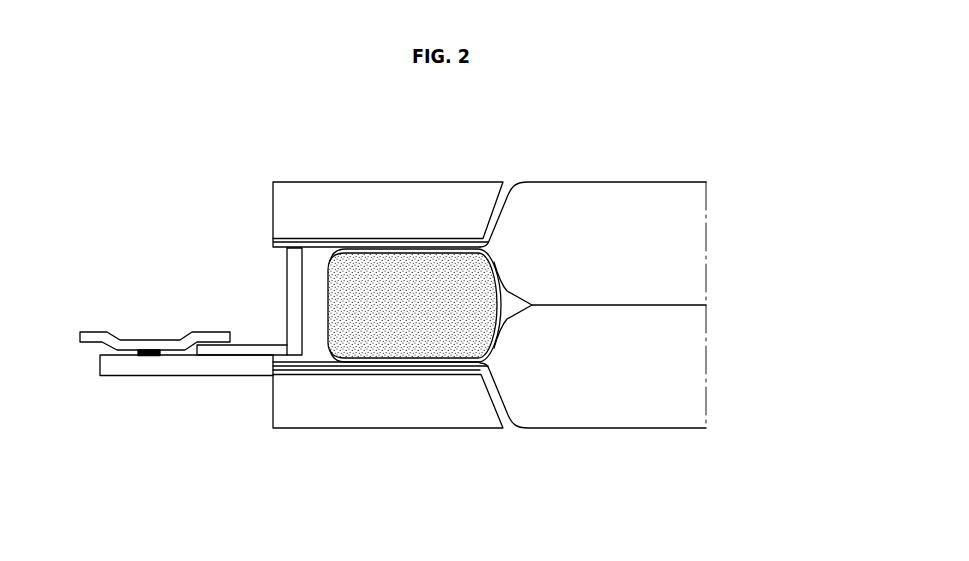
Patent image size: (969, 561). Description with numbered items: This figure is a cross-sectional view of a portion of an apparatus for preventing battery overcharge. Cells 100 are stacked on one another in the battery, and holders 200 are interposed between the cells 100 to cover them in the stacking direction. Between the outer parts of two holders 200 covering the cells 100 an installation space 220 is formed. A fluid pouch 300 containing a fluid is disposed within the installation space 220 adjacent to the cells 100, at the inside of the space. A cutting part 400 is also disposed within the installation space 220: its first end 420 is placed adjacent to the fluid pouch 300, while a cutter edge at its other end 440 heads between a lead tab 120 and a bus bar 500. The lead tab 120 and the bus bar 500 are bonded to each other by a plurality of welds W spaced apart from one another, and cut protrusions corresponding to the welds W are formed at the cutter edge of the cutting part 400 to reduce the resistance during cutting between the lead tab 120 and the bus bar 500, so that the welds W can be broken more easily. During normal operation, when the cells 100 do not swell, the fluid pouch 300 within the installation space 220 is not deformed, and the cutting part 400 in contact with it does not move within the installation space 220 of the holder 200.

The cell 100 is at (582, 205).
The holder 200 is at (329, 264).
The installation space 220 is at (275, 293).
The fluid pouch 300 is at (447, 325).
The cutting part 400 is at (264, 373).
The end of the cutting part 420 is at (296, 290).
The other end of the cutting part 440 is at (208, 348).
The bus bar 500 is at (93, 335).
The lead tab 120 is at (178, 368).
The weld W is at (142, 358).